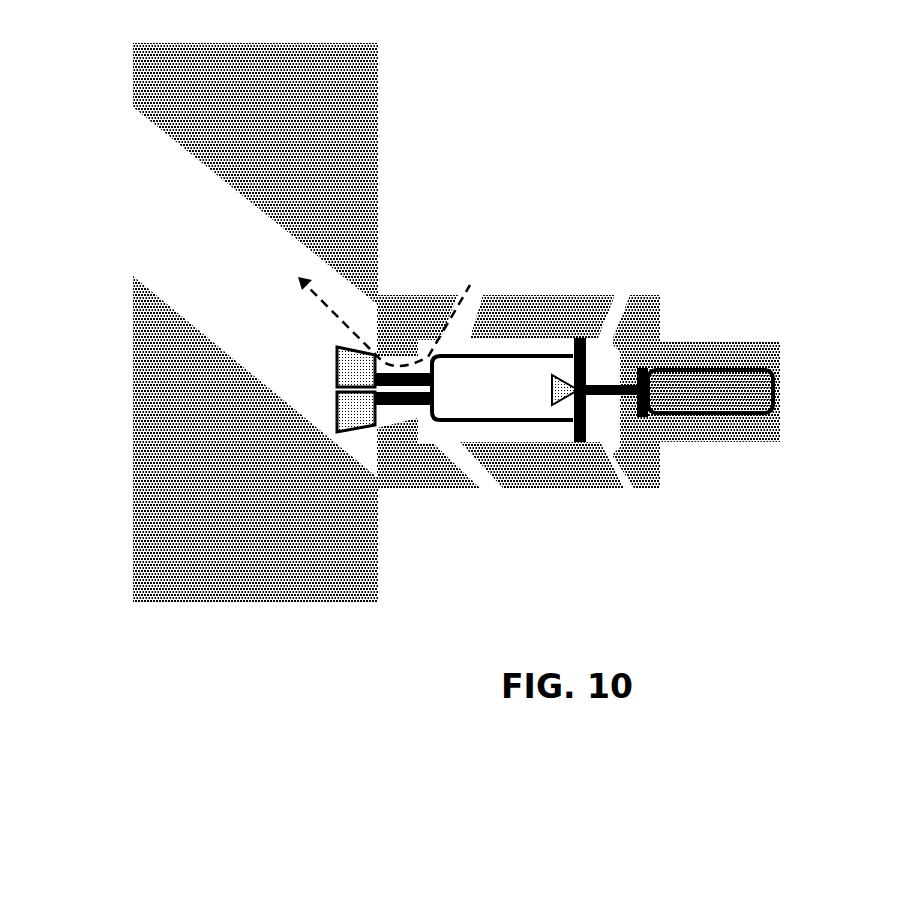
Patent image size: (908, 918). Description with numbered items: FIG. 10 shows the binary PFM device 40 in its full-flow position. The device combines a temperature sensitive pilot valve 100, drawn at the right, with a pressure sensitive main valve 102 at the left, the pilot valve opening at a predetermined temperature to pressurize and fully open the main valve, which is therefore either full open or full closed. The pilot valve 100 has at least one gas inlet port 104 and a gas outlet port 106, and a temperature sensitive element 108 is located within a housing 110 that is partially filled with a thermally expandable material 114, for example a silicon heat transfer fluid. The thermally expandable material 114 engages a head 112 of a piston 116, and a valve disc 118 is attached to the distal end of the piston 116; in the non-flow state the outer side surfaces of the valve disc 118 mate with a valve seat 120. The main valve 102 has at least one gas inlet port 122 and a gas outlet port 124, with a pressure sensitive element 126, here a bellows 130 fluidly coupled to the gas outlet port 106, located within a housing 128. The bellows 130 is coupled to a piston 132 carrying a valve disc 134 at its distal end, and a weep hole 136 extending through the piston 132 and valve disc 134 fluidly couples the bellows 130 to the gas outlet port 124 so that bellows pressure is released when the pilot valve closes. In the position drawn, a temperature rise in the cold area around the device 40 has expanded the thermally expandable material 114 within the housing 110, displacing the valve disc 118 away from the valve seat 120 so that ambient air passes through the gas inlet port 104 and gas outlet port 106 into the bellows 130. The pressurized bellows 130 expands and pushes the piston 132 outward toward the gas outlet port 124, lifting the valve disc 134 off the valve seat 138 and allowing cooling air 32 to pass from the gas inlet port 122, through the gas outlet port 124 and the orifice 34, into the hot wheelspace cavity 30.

The wheelspace cavity 30 is at (207, 323).
The cooling air 32 is at (332, 298).
The orifice 34 is at (214, 254).
The binary PFM device 40 is at (608, 205).
The temperature sensitive pilot valve 100 is at (778, 307).
The pressure sensitive main valve 102 is at (545, 530).
The gas inlet port 104 is at (633, 493).
The gas outlet port 106 is at (565, 372).
The temperature sensitive element 108 is at (762, 363).
The housing 110 is at (767, 420).
The head 112 is at (653, 415).
The thermally expandable material 114 is at (710, 391).
The piston 116 is at (605, 385).
The valve disc 118 is at (551, 390).
The valve seat 120 is at (578, 403).
The gas inlet port 122 is at (468, 293).
The gas outlet port 124 is at (391, 358).
The pressure sensitive element 126 is at (542, 348).
The housing 128 is at (513, 293).
The bellows 130 is at (517, 420).
The piston 132 is at (422, 406).
The valve disc 134 is at (340, 366).
The weep hole 136 is at (333, 383).
The valve seat 138 is at (393, 442).